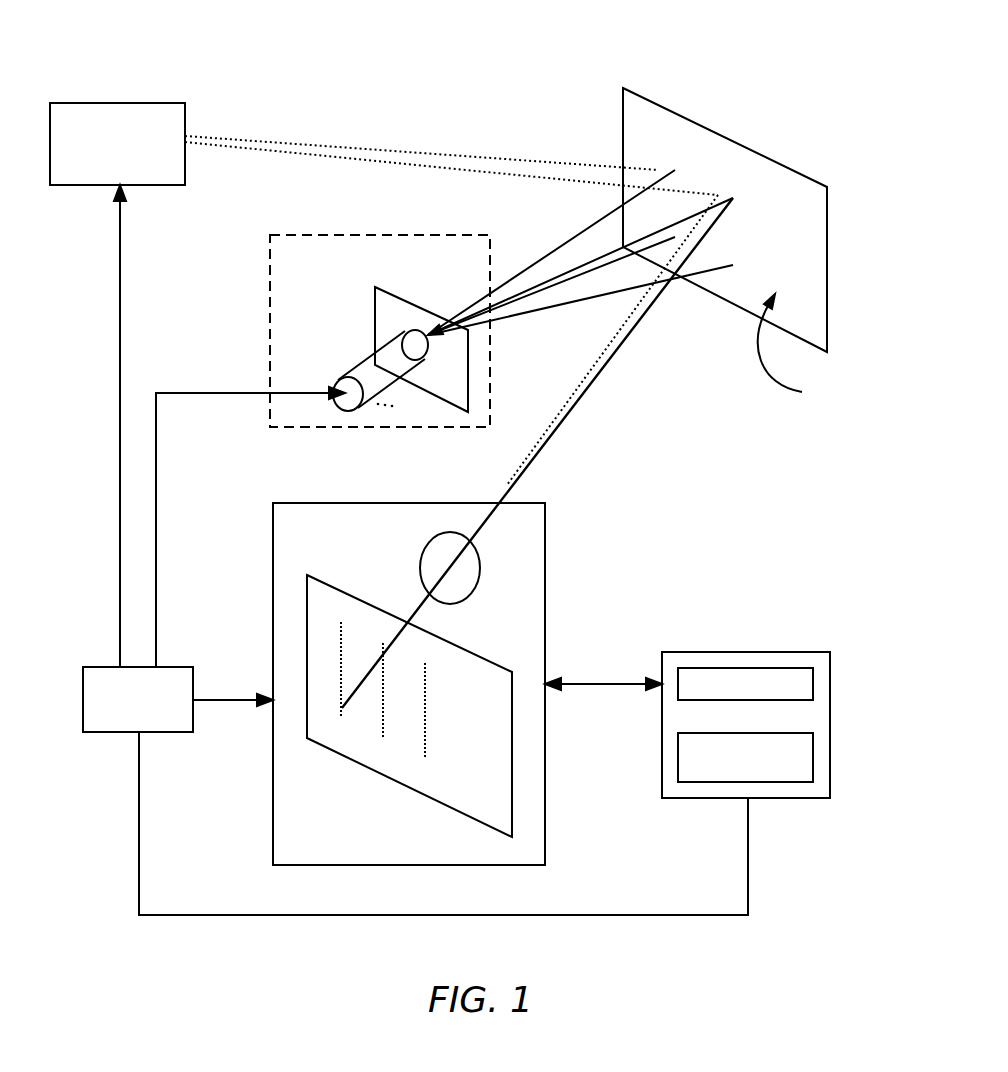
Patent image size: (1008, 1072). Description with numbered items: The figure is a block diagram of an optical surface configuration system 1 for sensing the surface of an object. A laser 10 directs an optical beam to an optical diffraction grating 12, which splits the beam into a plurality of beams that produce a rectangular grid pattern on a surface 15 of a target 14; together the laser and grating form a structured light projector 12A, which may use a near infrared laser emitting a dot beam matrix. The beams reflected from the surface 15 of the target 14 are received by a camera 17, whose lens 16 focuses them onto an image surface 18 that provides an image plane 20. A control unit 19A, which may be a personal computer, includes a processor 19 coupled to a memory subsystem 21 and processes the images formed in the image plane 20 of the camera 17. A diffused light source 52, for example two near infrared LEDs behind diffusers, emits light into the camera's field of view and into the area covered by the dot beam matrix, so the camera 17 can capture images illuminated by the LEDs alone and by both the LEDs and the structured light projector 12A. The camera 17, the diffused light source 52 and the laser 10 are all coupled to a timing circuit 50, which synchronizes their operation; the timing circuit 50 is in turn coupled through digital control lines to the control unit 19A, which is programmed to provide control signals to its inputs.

The optical surface configuration system 1 is at (818, 44).
The laser 10 is at (360, 366).
The optical diffraction grating 12 is at (434, 315).
The structured light projector 12A is at (333, 235).
The target 14 is at (792, 170).
The surface 15 is at (795, 348).
The lens 16 is at (478, 562).
The camera 17 is at (545, 585).
The image surface 18 is at (390, 780).
The processor 19 is at (746, 668).
The control unit 19A is at (813, 652).
The image plane 20 is at (340, 643).
The memory subsystem 21 is at (763, 782).
The timing circuit 50 is at (105, 667).
The diffused light source 52 is at (128, 102).